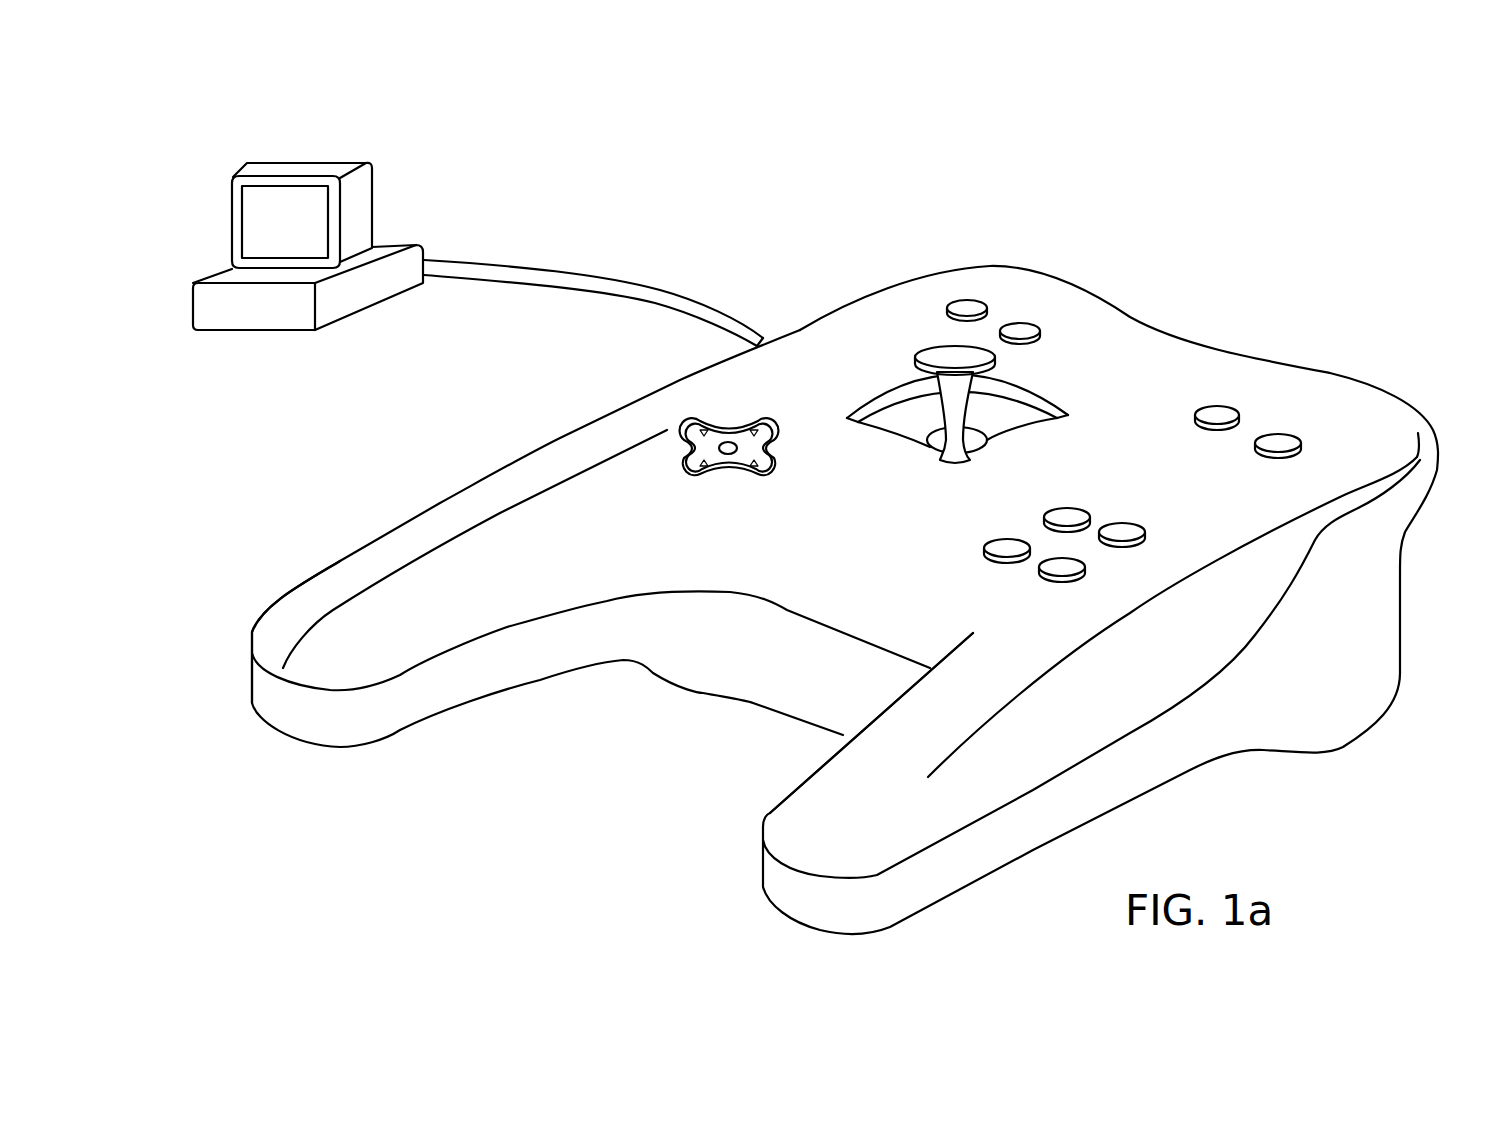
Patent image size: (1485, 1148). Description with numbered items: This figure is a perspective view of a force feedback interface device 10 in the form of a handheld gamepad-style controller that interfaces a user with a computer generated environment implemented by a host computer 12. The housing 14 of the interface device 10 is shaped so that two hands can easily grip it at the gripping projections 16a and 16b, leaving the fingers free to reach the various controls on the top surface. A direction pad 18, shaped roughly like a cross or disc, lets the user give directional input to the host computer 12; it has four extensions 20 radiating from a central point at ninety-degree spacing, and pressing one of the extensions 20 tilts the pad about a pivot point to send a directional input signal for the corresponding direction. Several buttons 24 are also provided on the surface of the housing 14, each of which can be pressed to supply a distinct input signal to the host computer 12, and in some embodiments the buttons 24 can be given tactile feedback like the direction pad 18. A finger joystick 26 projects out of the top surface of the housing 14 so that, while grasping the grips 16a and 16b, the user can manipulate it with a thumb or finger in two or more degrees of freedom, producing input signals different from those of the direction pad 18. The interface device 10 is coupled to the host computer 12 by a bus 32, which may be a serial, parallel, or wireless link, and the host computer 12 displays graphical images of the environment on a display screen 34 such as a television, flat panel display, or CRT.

The force feedback interface device 10 is at (845, 541).
The host computer 12 is at (478, 223).
The housing 14 is at (533, 487).
The gripping projection 16a is at (455, 626).
The gripping projection 16b is at (852, 814).
The direction pad 18 is at (709, 440).
The extension 20 is at (773, 418).
The button 24 is at (1020, 330).
The finger joystick 26 is at (992, 412).
The bus 32 is at (640, 283).
The display screen 34 is at (290, 195).